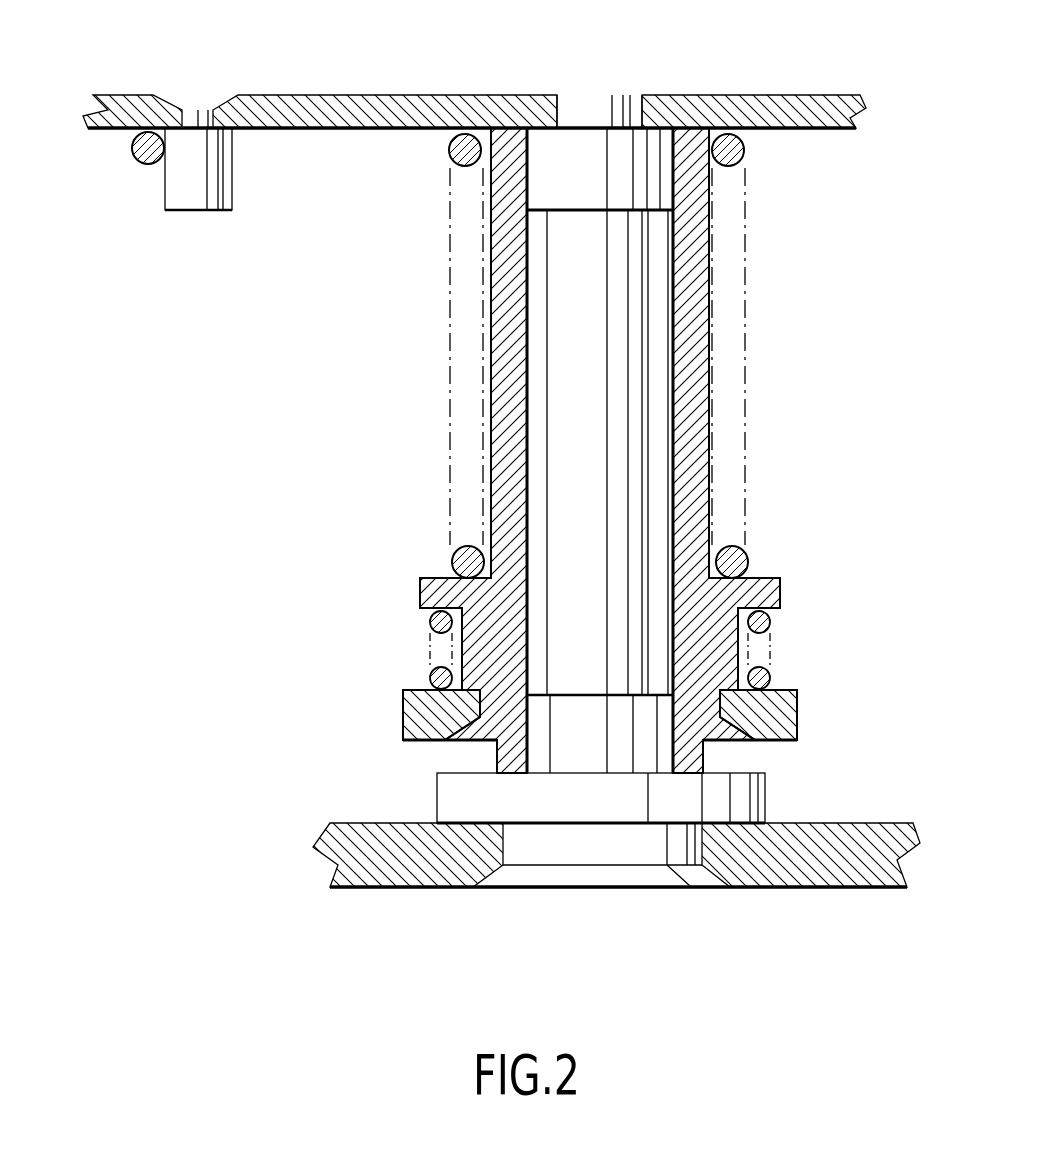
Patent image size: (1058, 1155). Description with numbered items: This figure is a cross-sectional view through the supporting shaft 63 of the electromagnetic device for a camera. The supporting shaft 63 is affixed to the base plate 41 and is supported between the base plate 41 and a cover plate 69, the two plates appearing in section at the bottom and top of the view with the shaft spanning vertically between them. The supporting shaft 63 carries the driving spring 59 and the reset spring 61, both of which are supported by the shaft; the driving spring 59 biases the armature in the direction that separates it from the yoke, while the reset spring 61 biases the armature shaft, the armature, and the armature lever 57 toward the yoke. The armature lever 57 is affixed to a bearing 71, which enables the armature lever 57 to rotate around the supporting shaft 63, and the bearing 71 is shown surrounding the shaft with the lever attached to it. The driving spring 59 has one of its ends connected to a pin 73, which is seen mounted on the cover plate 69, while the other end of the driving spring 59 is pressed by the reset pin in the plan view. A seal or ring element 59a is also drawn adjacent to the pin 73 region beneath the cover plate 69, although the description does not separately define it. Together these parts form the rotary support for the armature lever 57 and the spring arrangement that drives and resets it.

The cover plate 69 is at (823, 97).
The pin 73 is at (207, 198).
The O-ring 59a is at (140, 153).
The driving spring 59 is at (741, 146).
The supporting shaft 63 is at (582, 248).
The bearing 71 is at (762, 582).
The reset spring 61 is at (768, 618).
The armature lever 57 is at (797, 700).
The base plate 41 is at (810, 872).